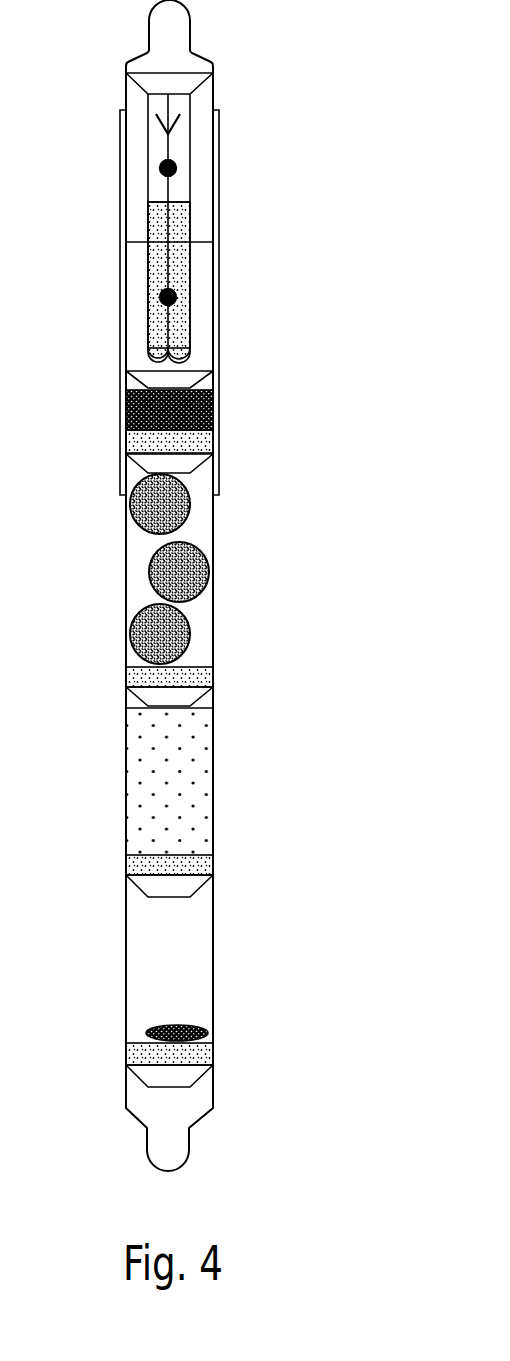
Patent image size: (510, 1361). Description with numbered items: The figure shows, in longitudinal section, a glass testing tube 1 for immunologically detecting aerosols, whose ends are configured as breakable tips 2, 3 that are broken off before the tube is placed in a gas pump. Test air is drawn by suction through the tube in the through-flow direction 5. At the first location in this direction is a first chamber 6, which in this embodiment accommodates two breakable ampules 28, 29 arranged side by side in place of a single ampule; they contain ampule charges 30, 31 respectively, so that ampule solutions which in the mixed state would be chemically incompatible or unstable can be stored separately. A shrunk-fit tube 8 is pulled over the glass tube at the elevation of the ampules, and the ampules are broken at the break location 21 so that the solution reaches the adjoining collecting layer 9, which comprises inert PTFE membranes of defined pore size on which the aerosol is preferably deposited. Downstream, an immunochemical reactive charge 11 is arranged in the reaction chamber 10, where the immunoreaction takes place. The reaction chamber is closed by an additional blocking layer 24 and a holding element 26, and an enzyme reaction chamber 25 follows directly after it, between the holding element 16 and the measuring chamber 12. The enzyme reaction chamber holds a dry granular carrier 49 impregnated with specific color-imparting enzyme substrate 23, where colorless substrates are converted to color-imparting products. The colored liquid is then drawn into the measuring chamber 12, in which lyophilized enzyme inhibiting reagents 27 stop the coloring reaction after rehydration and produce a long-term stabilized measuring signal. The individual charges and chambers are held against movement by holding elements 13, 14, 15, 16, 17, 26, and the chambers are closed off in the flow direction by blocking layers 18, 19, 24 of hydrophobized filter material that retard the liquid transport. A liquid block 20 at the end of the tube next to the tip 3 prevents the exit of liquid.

The testing tube 1 is at (213, 66).
The breakable tip 2 is at (190, 12).
The breakable tip 3 is at (190, 1148).
The through-flow direction 5 is at (176, 128).
The first chamber 6 is at (197, 313).
The shrunk-fit tube 8 is at (119, 140).
The collecting layer 9 is at (208, 405).
The reaction chamber 10 is at (192, 528).
The immunochemical reactive charge 11 is at (130, 507).
The measuring chamber 12 is at (186, 975).
The holding element 13 is at (141, 82).
The holding element 14 is at (140, 378).
The holding element 15 is at (142, 467).
The holding element 16 is at (142, 700).
The holding element 17 is at (134, 1083).
The blocking layer 18 is at (200, 445).
The blocking layer 19 is at (207, 680).
The liquid block 20 is at (206, 1055).
The break location 21 is at (131, 240).
The enzyme substrate 23 is at (196, 763).
The blocking layer 24 is at (206, 865).
The enzyme reaction chamber 25 is at (140, 780).
The holding element 26 is at (138, 887).
The enzyme inhibiting reagents 27 is at (148, 1030).
The breakable ampule 28 is at (182, 188).
The breakable ampule 29 is at (152, 186).
The ampule charge 30 is at (152, 292).
The ampule charge 31 is at (181, 270).
The granular carrier 49 is at (200, 820).